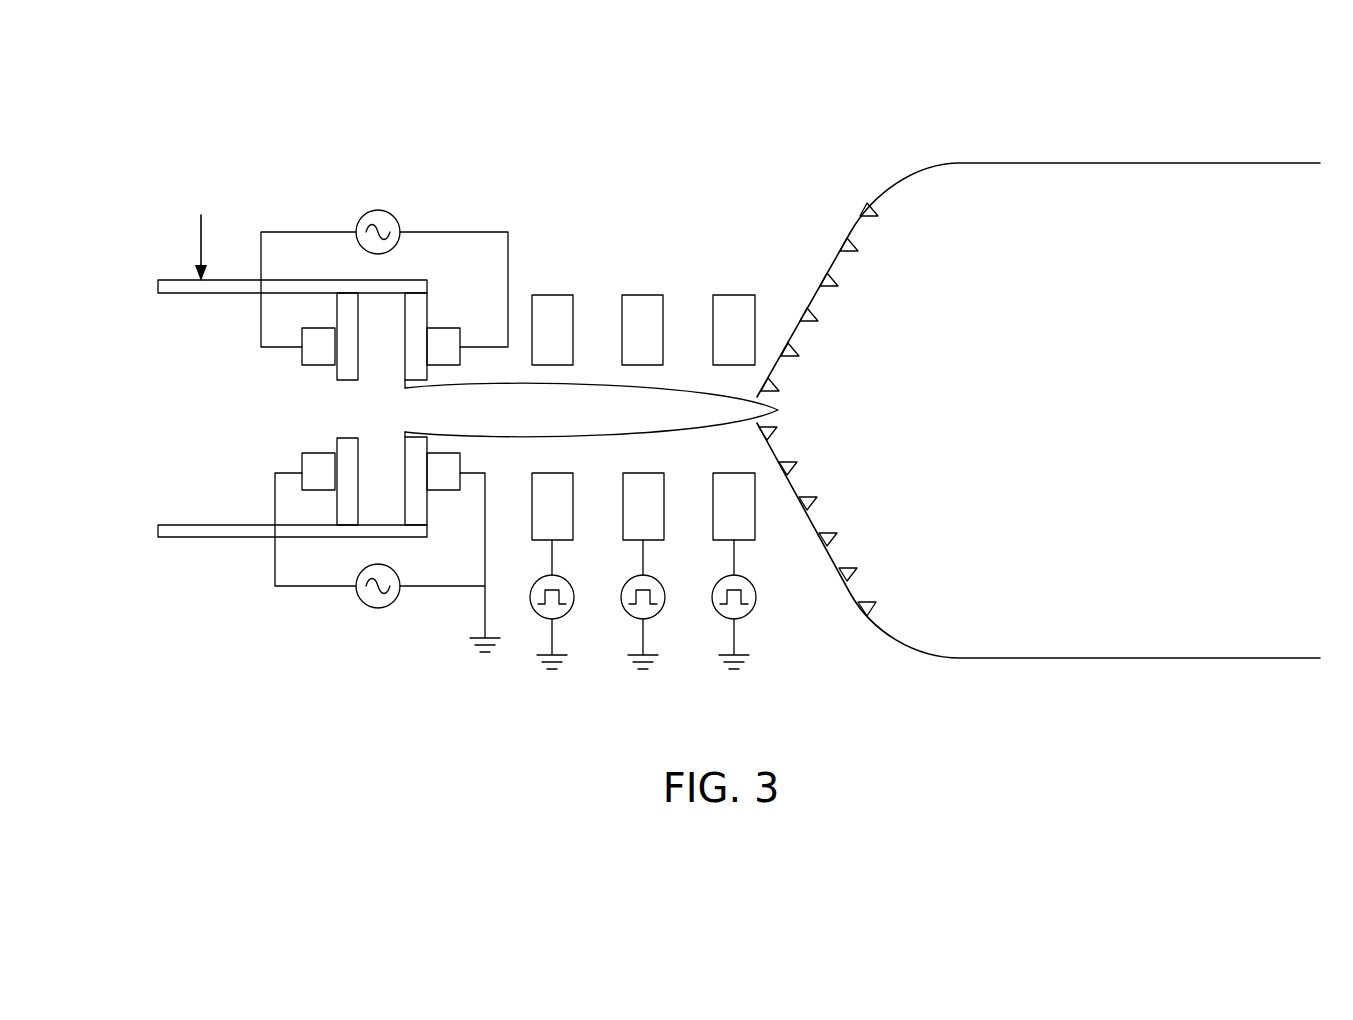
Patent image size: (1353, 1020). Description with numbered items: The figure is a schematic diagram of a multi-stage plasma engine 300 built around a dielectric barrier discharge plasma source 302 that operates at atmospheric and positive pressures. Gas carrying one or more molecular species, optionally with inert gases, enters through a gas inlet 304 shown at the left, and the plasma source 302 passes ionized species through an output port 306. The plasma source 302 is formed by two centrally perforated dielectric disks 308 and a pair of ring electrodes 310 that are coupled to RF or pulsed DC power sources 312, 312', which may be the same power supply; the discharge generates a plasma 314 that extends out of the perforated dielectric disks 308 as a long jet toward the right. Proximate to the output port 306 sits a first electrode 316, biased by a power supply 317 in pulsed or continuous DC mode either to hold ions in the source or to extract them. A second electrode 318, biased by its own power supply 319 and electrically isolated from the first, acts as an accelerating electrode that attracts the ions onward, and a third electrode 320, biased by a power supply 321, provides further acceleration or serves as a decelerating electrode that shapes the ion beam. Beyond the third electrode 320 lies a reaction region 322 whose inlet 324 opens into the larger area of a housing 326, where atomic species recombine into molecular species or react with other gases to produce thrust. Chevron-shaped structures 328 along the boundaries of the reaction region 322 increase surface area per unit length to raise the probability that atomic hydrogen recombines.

The multi-stage plasma engine 300 is at (165, 113).
The dielectric barrier discharge plasma source 302 is at (417, 264).
The gas inlet 304 is at (268, 408).
The output port 306 is at (400, 405).
The centrally perforated dielectric disks 308 is at (428, 307).
The ring electrodes 310 is at (310, 367).
The RF or pulsed DC power source 312 is at (384, 614).
The RF or pulsed DC power source 312' is at (372, 203).
The plasma 314 is at (524, 424).
The first electrode 316 is at (553, 295).
The power supply 317 is at (535, 615).
The second electrode 318 is at (643, 295).
The power supply 319 is at (626, 615).
The third electrode 320 is at (734, 295).
The power supply 321 is at (717, 615).
The reaction region 322 is at (1011, 424).
The inlet 324 is at (778, 411).
The housing 326 is at (1143, 163).
The structures 328 is at (838, 286).